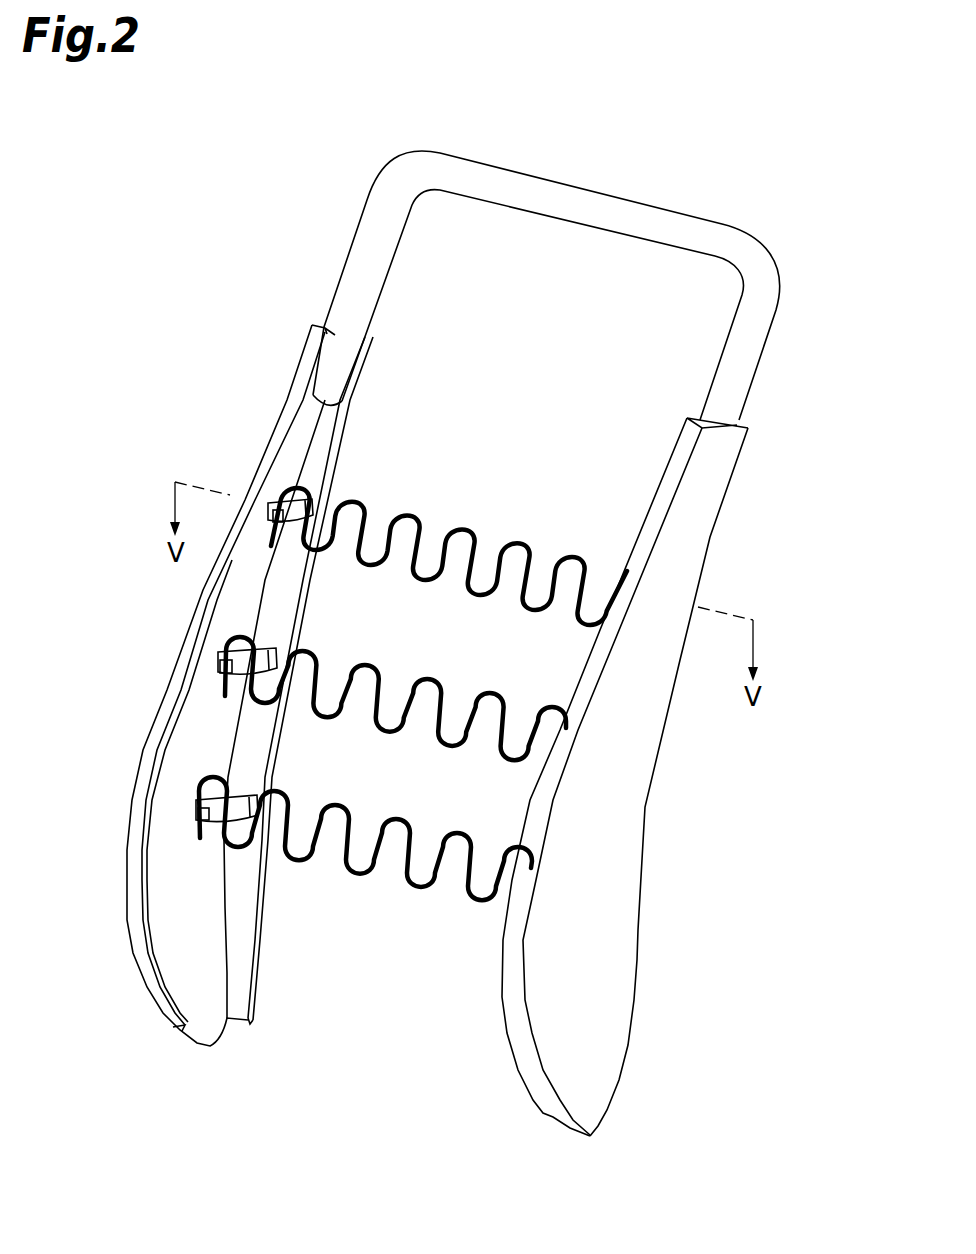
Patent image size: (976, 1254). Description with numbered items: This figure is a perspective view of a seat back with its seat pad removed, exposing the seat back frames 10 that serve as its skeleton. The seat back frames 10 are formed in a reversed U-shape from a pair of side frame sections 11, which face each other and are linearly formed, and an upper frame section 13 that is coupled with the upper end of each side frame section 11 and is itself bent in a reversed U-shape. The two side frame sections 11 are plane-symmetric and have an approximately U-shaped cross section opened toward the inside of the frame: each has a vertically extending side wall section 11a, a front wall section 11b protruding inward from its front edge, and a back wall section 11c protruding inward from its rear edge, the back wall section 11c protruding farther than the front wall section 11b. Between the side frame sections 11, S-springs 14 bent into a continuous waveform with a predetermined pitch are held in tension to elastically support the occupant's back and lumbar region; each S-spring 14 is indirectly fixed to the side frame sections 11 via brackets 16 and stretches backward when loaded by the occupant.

The seat back frame 10 is at (248, 306).
The side frame section 11 is at (170, 679).
The side wall section 11a is at (176, 900).
The front wall section 11b is at (130, 872).
The back wall section 11c is at (248, 927).
The upper frame section 13 is at (580, 187).
The S-spring 14 is at (409, 515).
The bracket 16 is at (306, 498).